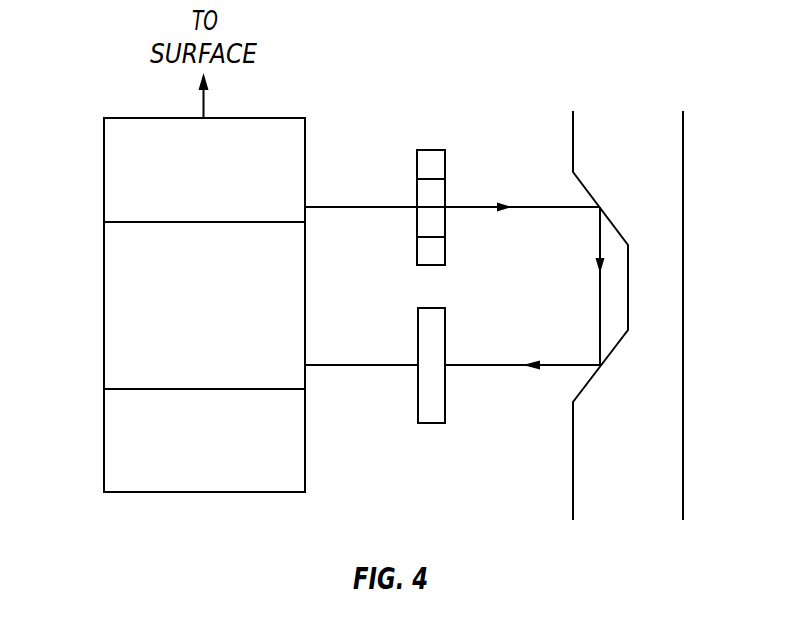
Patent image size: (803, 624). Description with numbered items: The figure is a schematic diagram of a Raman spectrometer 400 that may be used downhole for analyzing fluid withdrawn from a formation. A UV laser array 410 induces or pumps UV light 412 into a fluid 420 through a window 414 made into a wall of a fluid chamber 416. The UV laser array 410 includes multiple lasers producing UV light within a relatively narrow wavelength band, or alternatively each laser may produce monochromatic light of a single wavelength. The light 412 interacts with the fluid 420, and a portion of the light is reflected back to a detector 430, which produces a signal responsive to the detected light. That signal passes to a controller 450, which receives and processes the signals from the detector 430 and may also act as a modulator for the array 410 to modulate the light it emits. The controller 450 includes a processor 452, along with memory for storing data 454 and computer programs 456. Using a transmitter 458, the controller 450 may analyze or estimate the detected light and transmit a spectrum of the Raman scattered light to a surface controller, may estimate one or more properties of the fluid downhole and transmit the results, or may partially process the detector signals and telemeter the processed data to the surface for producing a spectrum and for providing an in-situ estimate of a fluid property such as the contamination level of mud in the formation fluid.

The Raman spectrometer 400 is at (395, 85).
The UV laser array 410 is at (417, 222).
The UV light 412 is at (463, 205).
The window 414 is at (581, 387).
The fluid chamber 416 is at (673, 198).
The fluid 420 is at (647, 154).
The detector 430 is at (418, 395).
The controller 450 is at (205, 492).
The processor 452 is at (104, 440).
The memory for storing data 454 is at (104, 305).
The computer programs 456 is at (225, 318).
The transmitter 458 is at (104, 170).